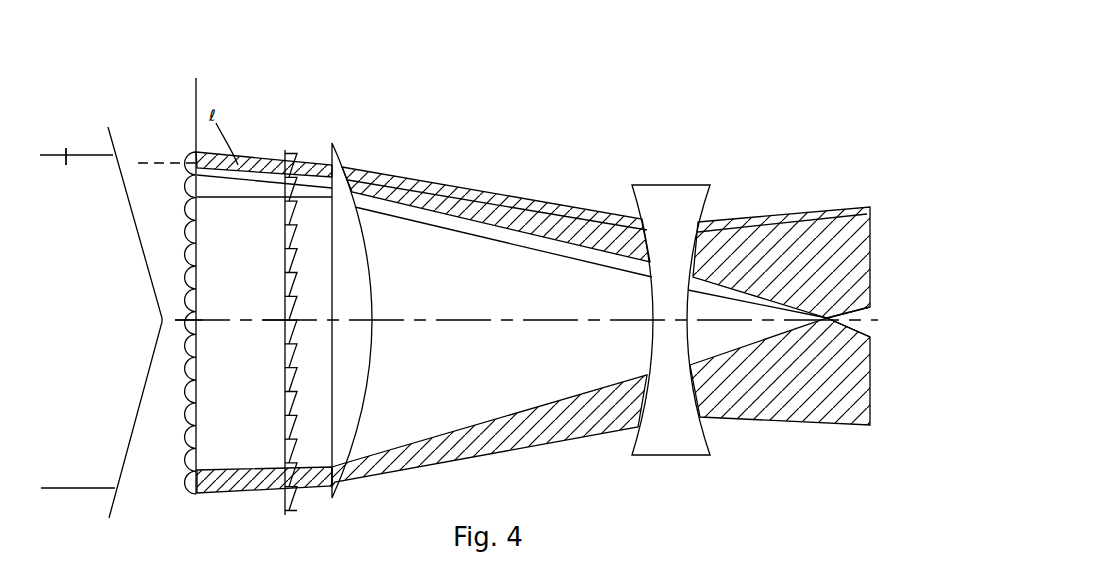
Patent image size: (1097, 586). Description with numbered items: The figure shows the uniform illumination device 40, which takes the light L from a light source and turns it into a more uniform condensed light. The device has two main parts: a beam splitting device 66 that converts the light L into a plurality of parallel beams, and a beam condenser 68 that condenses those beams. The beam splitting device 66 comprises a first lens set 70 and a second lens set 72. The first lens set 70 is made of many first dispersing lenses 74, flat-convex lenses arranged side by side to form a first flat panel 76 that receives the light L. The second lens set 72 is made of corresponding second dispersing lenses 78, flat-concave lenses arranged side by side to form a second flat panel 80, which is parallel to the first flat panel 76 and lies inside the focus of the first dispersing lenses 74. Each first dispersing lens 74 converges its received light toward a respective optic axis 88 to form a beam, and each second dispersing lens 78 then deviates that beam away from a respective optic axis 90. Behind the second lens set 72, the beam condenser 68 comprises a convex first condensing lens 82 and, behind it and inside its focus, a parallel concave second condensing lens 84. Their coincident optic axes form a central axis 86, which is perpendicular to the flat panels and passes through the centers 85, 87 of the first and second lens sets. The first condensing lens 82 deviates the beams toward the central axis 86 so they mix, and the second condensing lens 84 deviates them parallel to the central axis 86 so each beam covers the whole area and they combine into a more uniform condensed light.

The uniform illumination device 40 is at (598, 71).
The beam splitting device 66 is at (236, 79).
The beam condenser 68 is at (484, 124).
The first lens set 70 is at (147, 149).
The second lens set 72 is at (303, 152).
The first dispersing lens 74 is at (190, 153).
The first flat panel 76 is at (196, 78).
The second dispersing lens 78 is at (285, 150).
The second flat panel 80 is at (285, 507).
The first condensing lens 82 is at (336, 150).
The second condensing lens 84 is at (665, 208).
The center of the first lens set 85 is at (197, 321).
The central axis 86 is at (527, 322).
The center of the second lens set 87 is at (273, 320).
The optic axis of first dispersing lens 88 is at (157, 165).
The optic axis of second dispersing lens 90 is at (268, 165).
The light from the light source L is at (66, 148).